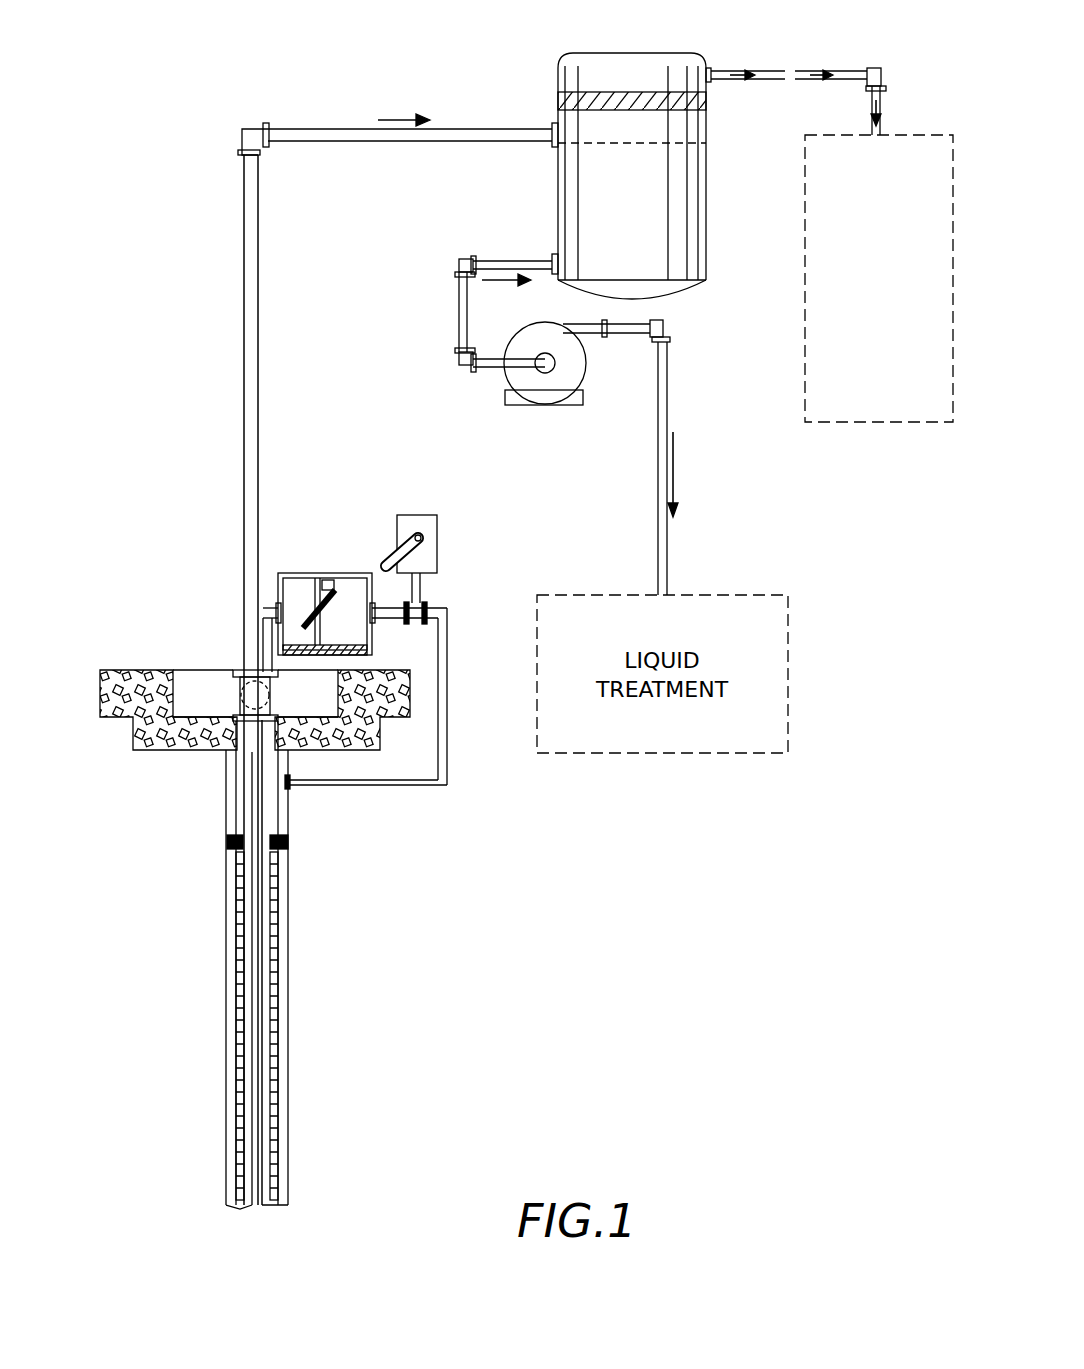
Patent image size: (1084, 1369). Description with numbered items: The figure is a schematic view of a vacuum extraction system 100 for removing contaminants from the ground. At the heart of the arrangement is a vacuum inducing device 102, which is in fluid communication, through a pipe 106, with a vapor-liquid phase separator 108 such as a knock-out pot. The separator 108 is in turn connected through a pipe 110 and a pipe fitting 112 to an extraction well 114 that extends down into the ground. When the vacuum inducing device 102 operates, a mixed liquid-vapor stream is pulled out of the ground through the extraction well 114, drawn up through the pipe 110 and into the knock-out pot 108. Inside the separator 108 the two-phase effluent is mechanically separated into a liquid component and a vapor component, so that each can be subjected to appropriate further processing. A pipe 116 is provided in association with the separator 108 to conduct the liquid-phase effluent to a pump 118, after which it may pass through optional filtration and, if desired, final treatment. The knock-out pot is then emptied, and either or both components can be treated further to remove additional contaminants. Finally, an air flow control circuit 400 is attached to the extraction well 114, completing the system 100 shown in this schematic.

The system 100 is at (290, 86).
The vacuum inducing device 102 is at (880, 413).
The pipe 106 is at (806, 72).
The vapor-liquid phase separator 108 is at (578, 90).
The pipe 110 is at (245, 345).
The pipe fitting 112 is at (238, 673).
The extraction well 114 is at (328, 942).
The pipe 116 is at (508, 262).
The pump 118 is at (538, 394).
The air flow control circuit 400 is at (440, 760).